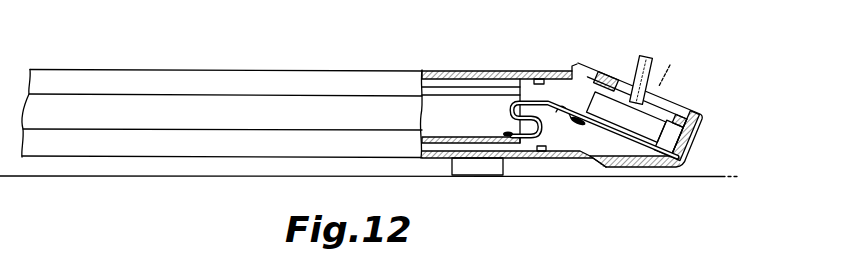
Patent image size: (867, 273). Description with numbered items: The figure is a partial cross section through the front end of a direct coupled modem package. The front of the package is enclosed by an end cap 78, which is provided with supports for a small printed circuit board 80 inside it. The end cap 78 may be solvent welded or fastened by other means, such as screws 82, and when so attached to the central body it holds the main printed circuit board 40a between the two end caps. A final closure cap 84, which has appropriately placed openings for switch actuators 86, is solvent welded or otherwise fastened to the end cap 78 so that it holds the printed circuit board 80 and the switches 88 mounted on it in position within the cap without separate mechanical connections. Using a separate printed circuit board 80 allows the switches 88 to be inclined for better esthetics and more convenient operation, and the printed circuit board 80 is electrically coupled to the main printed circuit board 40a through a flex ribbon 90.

The main printed circuit board 40a is at (452, 137).
The end cap 78 is at (693, 141).
The printed circuit board 80 is at (650, 134).
The screws 82 is at (539, 71).
The closure cap 84 is at (577, 63).
The switch actuators 86 is at (647, 57).
The switches 88 is at (660, 140).
The flex ribbon 90 is at (514, 101).